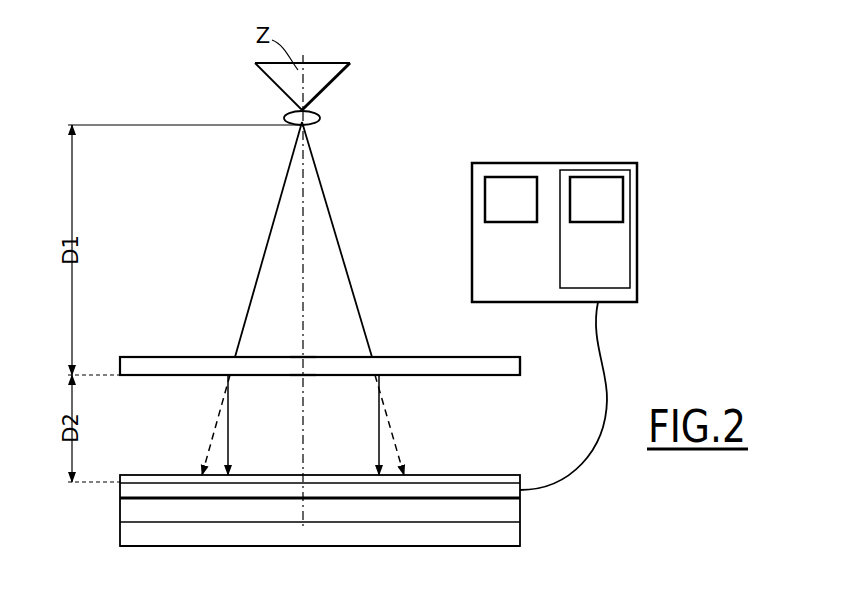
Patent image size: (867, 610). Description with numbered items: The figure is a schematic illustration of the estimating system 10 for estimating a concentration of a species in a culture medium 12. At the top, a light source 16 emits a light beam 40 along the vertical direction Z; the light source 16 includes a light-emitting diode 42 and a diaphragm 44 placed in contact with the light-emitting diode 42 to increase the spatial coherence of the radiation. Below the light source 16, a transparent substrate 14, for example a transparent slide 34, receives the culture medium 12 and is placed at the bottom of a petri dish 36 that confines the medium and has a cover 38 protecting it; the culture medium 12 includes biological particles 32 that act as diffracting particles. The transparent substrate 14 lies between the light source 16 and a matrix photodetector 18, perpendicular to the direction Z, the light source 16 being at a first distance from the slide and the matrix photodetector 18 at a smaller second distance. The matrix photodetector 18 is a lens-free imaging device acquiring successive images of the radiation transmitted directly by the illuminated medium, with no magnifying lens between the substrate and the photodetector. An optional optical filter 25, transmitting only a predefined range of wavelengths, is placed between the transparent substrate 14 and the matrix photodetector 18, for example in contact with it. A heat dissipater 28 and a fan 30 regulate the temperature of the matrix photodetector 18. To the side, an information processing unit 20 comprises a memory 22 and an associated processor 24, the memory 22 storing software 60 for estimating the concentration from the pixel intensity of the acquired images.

The estimating system 10 is at (496, 109).
The culture medium 12 is at (306, 379).
The transparent substrate 14 is at (451, 377).
The light source 16 is at (378, 102).
The matrix photodetector 18 is at (444, 492).
The information processing unit 20 is at (553, 163).
The memory 22 is at (559, 250).
The processor 24 is at (511, 199).
The optical filter 25 is at (516, 473).
The heat dissipater 28 is at (510, 512).
The fan 30 is at (508, 535).
The biological particles 32 is at (300, 371).
The transparent slide 34 is at (273, 377).
The petri dish 36 is at (497, 366).
The cover 38 is at (457, 357).
The light beam 40 is at (343, 243).
The light-emitting diode 42 is at (316, 83).
The diaphragm 44 is at (320, 119).
The software 60 is at (596, 199).